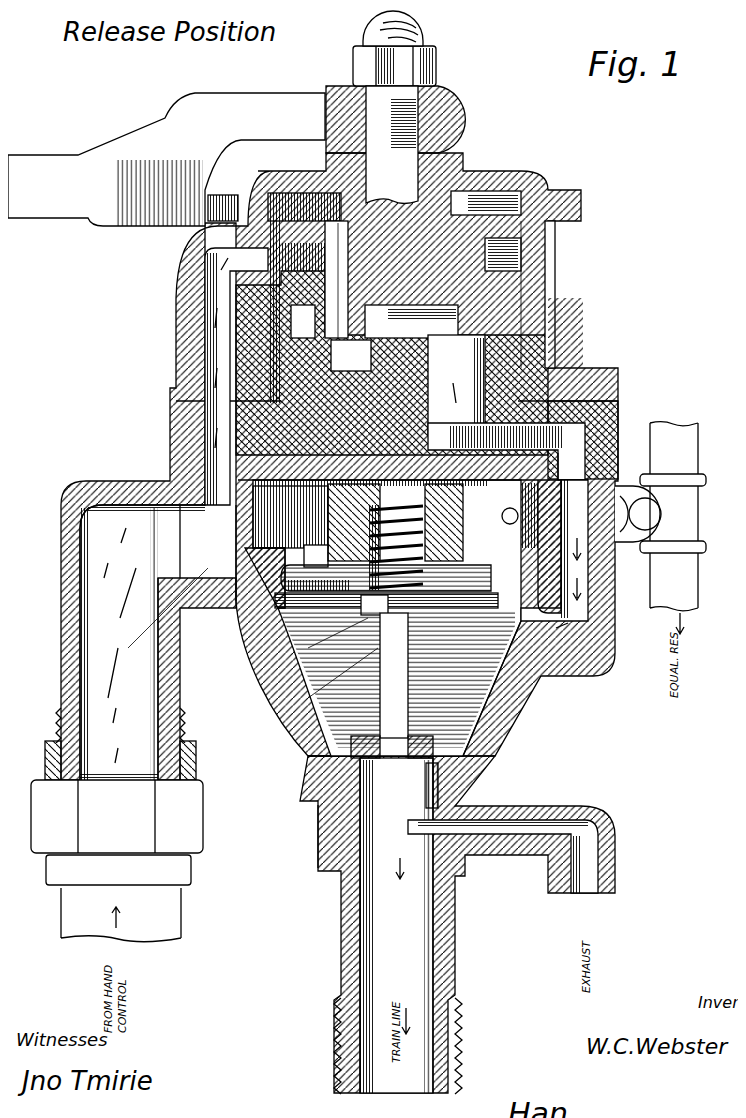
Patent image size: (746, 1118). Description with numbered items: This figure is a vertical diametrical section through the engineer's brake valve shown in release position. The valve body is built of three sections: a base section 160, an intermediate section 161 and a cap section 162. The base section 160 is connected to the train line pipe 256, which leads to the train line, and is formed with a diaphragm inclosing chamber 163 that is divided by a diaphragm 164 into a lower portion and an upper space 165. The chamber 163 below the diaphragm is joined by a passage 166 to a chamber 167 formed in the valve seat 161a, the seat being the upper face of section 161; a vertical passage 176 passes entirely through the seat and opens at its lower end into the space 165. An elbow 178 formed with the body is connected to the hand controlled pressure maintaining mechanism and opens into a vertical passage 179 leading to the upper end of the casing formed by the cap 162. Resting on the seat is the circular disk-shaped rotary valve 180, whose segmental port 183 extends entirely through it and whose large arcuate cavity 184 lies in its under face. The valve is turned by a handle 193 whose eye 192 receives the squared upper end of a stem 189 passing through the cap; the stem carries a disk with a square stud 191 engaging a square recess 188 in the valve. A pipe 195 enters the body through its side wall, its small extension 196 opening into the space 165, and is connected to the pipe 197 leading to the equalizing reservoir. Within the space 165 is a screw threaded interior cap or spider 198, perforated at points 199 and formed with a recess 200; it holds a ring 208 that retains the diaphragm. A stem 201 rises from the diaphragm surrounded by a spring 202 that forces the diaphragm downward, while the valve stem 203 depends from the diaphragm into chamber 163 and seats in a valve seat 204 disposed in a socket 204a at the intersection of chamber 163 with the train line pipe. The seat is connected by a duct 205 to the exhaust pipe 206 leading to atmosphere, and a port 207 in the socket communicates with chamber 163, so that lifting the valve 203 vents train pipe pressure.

The base section 160 is at (513, 677).
The intermediate section 161 is at (470, 340).
The valve seat 161a is at (537, 335).
The cap section 162 is at (530, 231).
The diaphragm inclosing chamber 163 is at (395, 695).
The diaphragm 164 is at (440, 602).
The space above the diaphragm 165 is at (386, 560).
The passage 166 is at (595, 617).
The chamber 167 is at (597, 402).
The vertical passage 176 is at (331, 338).
The elbow 178 is at (142, 642).
The vertical passage 179 is at (178, 297).
The rotary valve 180 is at (497, 273).
The segmental shaped port 183 is at (343, 282).
The arcuate cavity 184 is at (372, 316).
The square recess 188 is at (513, 190).
The stem 189 is at (410, 147).
The square stud 191 is at (410, 63).
The eye 192 is at (428, 72).
The handle 193 is at (50, 155).
The pipe 195 is at (637, 529).
The small extension 196 is at (620, 535).
The equalizing reservoir pipe 197 is at (673, 516).
The interior cap or spider 198 is at (233, 543).
The perforations 199 is at (520, 523).
The recess 200 is at (420, 535).
The stem 201 is at (477, 430).
The spring 202 is at (350, 500).
The valve stem 203 is at (410, 633).
The valve seat 204 is at (318, 765).
The socket 204a is at (455, 700).
The duct 205 is at (458, 806).
The exhaust pipe 206 is at (493, 855).
The port 207 is at (310, 597).
The ring 208 is at (228, 596).
The train line pipe 256 is at (447, 893).